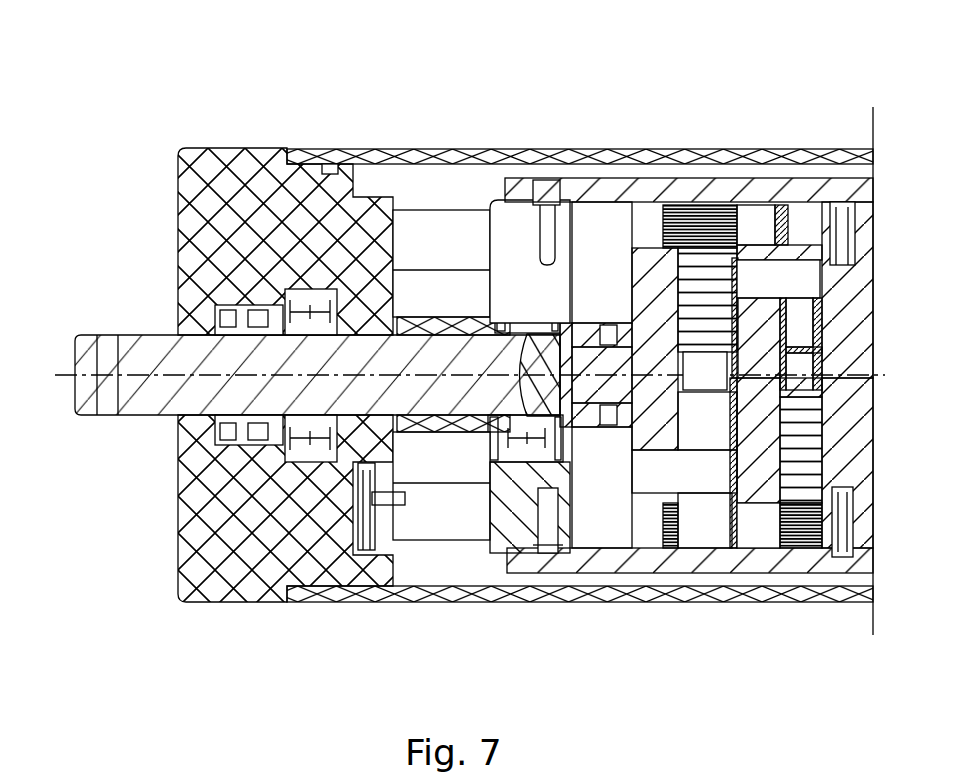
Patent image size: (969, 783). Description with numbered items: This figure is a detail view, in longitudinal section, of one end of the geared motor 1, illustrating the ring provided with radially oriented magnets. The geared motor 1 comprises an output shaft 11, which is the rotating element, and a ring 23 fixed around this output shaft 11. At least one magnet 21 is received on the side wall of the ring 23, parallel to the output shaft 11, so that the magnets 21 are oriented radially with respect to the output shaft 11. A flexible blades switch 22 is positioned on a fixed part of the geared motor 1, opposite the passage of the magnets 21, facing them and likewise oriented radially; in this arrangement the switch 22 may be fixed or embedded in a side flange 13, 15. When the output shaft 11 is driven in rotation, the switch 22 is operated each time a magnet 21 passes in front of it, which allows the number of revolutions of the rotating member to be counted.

The geared motor 1 is at (375, 123).
The output shaft 11 is at (148, 335).
The side flange 13 is at (188, 546).
The side flange 15 is at (248, 546).
The magnet 21 is at (355, 288).
The flexible blades switch 22 is at (362, 500).
The ring 23 is at (438, 428).